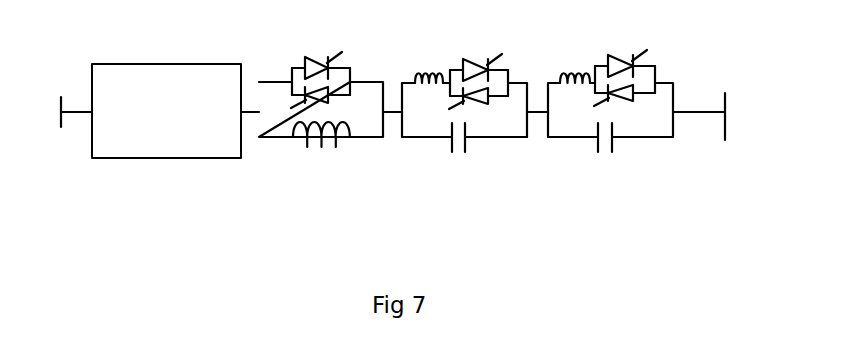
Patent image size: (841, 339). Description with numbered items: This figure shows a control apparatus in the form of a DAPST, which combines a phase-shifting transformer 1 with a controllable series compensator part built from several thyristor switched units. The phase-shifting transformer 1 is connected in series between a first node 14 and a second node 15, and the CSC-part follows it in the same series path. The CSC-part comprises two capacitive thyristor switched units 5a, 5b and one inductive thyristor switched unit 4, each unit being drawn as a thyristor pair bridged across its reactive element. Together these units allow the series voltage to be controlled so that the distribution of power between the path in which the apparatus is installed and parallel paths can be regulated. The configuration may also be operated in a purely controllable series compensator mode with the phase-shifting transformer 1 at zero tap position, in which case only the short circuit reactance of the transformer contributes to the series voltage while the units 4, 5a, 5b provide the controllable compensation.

The phase-shifting transformer 1 is at (177, 63).
The inductive unit 4 is at (330, 195).
The capacitive unit 5a is at (475, 195).
The capacitive unit 5b is at (625, 195).
The first node 14 is at (69, 99).
The second node 15 is at (708, 100).